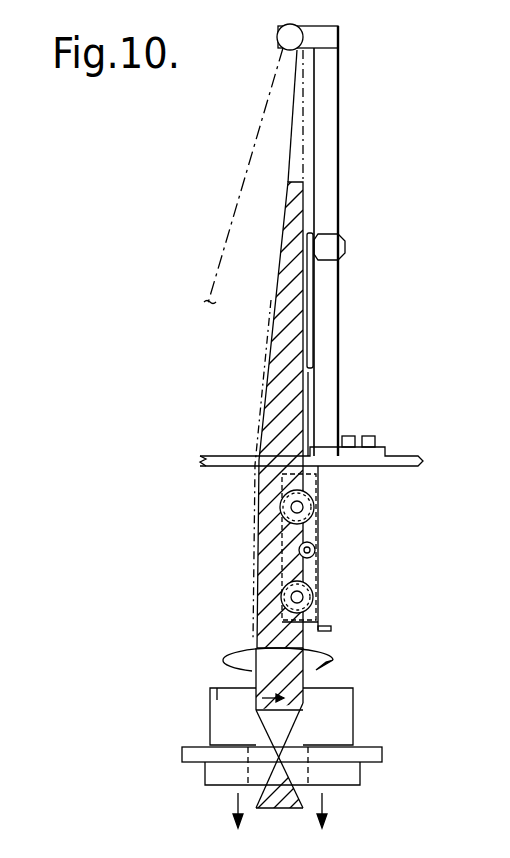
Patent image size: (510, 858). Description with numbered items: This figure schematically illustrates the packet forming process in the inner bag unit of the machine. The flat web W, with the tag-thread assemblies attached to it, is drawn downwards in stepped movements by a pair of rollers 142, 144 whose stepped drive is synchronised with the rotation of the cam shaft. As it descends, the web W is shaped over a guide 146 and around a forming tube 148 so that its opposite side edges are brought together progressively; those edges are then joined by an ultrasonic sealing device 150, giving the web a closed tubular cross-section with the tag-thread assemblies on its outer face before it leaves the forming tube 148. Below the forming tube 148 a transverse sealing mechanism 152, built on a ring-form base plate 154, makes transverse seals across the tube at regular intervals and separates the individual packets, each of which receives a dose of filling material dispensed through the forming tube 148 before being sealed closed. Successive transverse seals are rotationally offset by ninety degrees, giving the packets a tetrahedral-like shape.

The web W is at (254, 126).
The roller 142 is at (320, 507).
The roller 144 is at (307, 602).
The guide 146 is at (268, 346).
The forming tube 148 is at (257, 614).
The ultrasonic sealing device 150 is at (310, 553).
The transverse sealing mechanism 152 is at (208, 698).
The ring-form base plate 154 is at (372, 752).